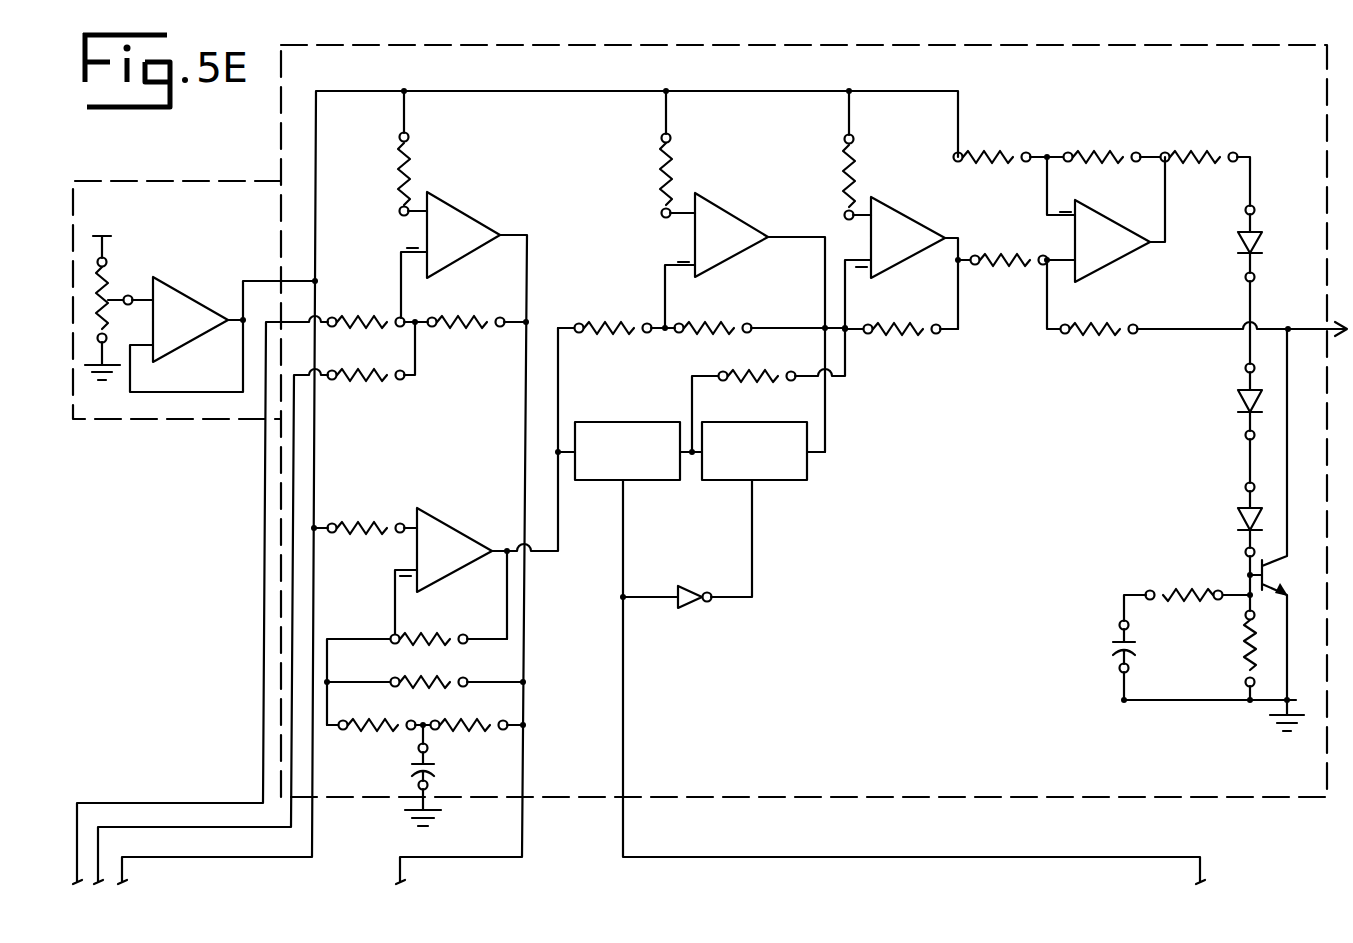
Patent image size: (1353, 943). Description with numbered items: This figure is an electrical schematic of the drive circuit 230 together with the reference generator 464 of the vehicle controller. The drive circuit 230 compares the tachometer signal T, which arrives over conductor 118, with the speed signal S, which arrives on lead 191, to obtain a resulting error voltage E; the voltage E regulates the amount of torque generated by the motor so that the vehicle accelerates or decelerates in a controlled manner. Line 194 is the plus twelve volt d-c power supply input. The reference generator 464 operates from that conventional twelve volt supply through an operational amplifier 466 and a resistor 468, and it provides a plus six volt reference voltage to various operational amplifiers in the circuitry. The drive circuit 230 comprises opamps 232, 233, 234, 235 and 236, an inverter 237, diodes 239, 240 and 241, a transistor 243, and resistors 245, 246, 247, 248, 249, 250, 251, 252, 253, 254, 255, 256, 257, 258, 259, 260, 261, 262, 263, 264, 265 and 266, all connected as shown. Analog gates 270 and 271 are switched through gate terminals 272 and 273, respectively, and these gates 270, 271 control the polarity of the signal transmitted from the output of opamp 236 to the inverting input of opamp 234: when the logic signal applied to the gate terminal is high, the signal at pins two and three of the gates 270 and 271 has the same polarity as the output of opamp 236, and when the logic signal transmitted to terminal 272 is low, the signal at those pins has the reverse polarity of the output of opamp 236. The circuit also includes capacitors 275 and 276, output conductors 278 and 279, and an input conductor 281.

The drive circuit 230 is at (615, 44).
The reference generator 464 is at (140, 179).
The resistor 468 is at (110, 290).
The operational amplifier 466 is at (190, 295).
The line 194 is at (404, 90).
The lead 191 is at (77, 880).
The conductor 118 is at (152, 827).
The resistor 245 is at (410, 160).
The opamp 232 is at (470, 218).
The error voltage E is at (527, 268).
The resistor 246 is at (372, 308).
The resistor 248 is at (465, 326).
The resistor 247 is at (378, 380).
The resistor 249 is at (366, 522).
The opamp 236 is at (450, 528).
The resistor 250 is at (442, 636).
The resistor 251 is at (447, 678).
The resistor 252 is at (385, 702).
The resistor 253 is at (450, 720).
The capacitor 275 is at (415, 762).
The output conductor 278 is at (400, 868).
The analog gate 270 is at (640, 412).
The analog gate 271 is at (790, 483).
The gate terminal 272 is at (626, 495).
The gate terminal 273 is at (752, 490).
The inverter 237 is at (690, 605).
The input conductor 281 is at (1205, 875).
The resistor 254 is at (612, 322).
The resistor 255 is at (664, 176).
The opamp 233 is at (720, 213).
The resistor 256 is at (720, 318).
The resistor 257 is at (745, 366).
The resistor 258 is at (858, 160).
The opamp 234 is at (900, 215).
The resistor 259 is at (898, 340).
The resistor 260 is at (1005, 270).
The resistor 261 is at (1002, 148).
The resistor 262 is at (1085, 148).
The resistor 263 is at (1215, 138).
The opamp 235 is at (1110, 218).
The resistor 264 is at (1095, 345).
The output conductor 279 is at (1290, 325).
The diode 239 is at (1262, 245).
The diode 240 is at (1240, 400).
The diode 241 is at (1238, 518).
The transistor 243 is at (1268, 570).
The resistor 265 is at (1190, 590).
The capacitor 276 is at (1112, 645).
The resistor 266 is at (1240, 658).